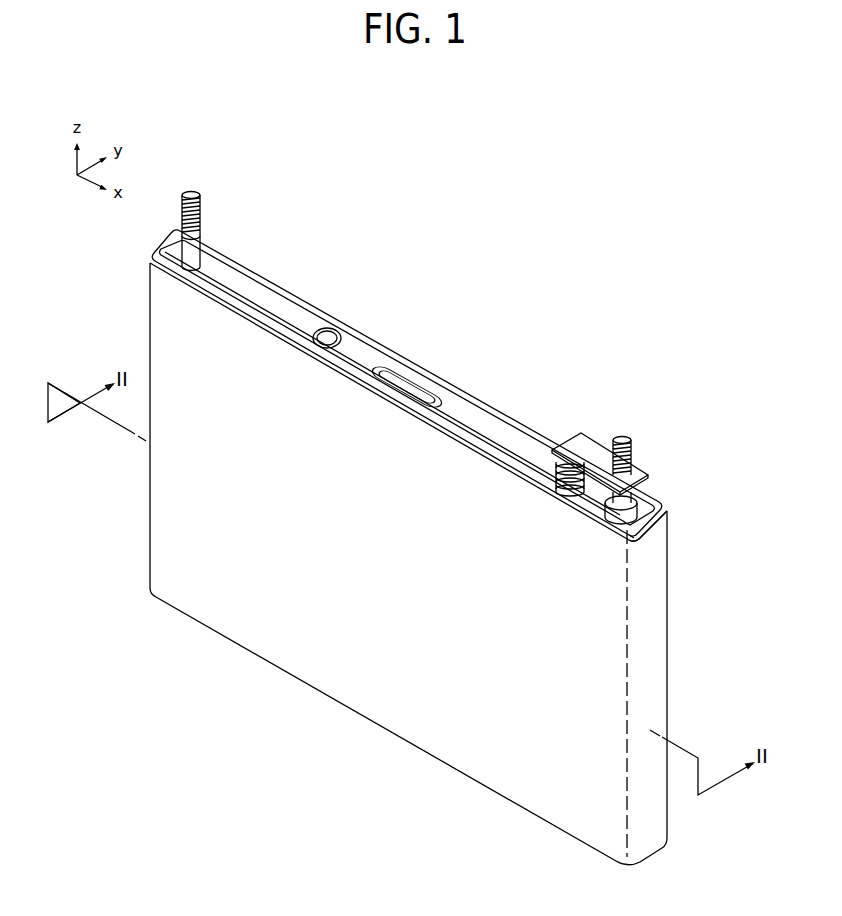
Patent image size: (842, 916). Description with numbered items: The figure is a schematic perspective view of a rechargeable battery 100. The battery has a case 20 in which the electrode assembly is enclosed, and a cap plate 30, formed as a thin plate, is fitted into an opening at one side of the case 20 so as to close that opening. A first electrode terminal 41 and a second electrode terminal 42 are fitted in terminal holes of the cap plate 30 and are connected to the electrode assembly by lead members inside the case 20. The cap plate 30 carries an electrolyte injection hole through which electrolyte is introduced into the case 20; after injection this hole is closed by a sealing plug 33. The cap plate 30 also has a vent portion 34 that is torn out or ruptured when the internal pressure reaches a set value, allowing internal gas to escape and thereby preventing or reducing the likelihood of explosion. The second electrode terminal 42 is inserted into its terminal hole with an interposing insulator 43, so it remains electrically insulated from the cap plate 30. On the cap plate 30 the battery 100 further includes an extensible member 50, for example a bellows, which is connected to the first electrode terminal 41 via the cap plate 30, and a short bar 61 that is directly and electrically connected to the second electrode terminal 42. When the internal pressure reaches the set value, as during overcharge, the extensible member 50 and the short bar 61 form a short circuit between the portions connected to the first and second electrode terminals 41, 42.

The rechargeable battery 100 is at (490, 357).
The case 20 is at (365, 696).
The cap plate 30 is at (375, 342).
The sealing plug 33 is at (330, 330).
The vent portion 34 is at (410, 388).
The first electrode terminal 41 is at (192, 197).
The second electrode terminal 42 is at (623, 441).
The insulator 43 is at (664, 535).
The extensible member 50 is at (558, 483).
The short bar 61 is at (572, 437).